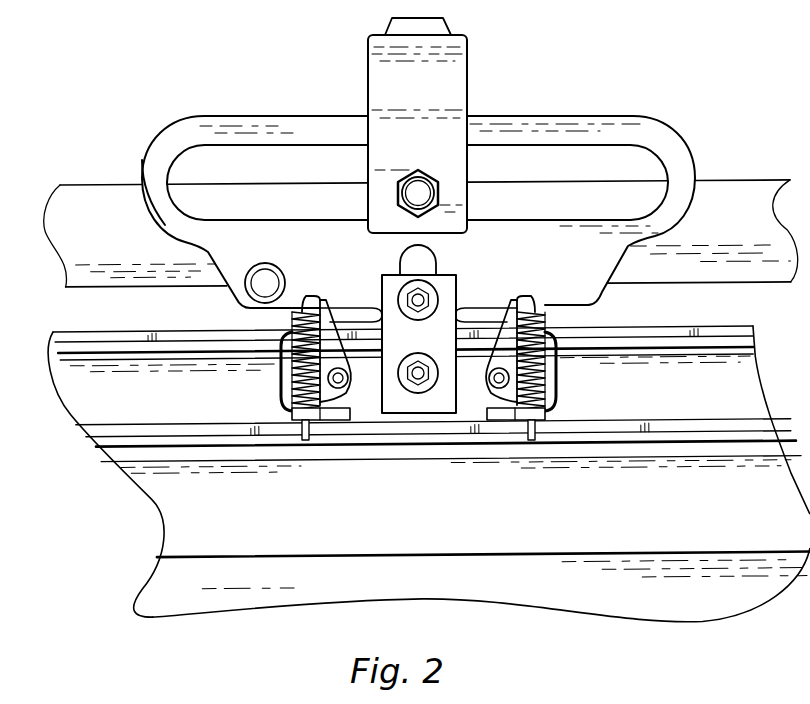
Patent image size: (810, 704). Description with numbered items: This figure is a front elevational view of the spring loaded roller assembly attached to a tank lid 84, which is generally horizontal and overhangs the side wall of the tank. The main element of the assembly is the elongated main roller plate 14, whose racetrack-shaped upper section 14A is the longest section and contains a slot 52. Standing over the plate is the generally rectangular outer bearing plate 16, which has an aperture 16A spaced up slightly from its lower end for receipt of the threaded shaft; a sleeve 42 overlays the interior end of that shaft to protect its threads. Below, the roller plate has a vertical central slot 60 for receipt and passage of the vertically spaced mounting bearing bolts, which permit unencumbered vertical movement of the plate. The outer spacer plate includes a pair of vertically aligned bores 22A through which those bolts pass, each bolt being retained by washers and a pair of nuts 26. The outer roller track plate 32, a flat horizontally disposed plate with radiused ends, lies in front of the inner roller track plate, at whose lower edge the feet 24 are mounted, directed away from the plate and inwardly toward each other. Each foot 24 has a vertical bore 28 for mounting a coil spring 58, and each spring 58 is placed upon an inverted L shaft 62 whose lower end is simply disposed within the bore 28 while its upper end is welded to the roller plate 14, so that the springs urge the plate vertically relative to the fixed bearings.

The main roller plate 14 is at (390, 194).
The upper section of main roller plate 14A is at (148, 152).
The outer bearing plate 16 is at (387, 80).
The aperture 16A is at (414, 172).
The sleeve 42 is at (396, 203).
The slot 52 is at (648, 160).
The lid 84 is at (101, 246).
The vertical central slot 60 is at (424, 250).
The outer roller track plate 32 is at (438, 372).
The vertically aligned bores 22A is at (421, 394).
The coil spring 58 is at (290, 360).
The vertical bore 28 is at (298, 422).
The nuts 26 is at (500, 384).
The feet 24 is at (355, 421).
The inverted L shaft 62 is at (306, 441).